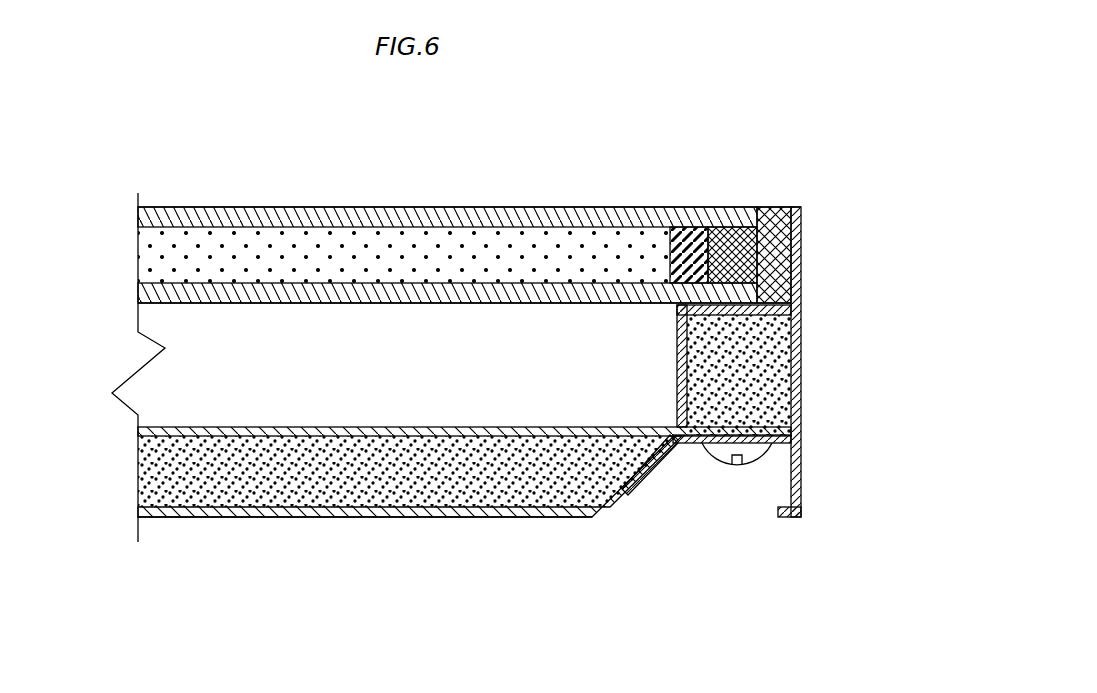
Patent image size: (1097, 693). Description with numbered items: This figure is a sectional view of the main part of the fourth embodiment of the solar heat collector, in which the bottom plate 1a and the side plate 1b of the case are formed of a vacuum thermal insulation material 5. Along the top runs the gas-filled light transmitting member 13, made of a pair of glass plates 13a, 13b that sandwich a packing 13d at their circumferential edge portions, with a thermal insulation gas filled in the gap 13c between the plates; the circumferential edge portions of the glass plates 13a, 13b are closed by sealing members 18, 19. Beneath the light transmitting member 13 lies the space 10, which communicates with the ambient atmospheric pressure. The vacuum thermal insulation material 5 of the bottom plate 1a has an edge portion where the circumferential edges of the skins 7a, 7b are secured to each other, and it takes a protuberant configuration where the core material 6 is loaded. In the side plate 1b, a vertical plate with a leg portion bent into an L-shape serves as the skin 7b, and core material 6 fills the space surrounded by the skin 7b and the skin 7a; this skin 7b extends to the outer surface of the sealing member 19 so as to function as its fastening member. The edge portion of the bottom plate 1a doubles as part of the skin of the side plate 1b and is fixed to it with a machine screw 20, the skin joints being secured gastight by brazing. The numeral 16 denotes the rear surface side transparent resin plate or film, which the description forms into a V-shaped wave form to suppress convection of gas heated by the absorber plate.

The gas-filled light transmitting member 13 is at (458, 326).
The glass plate 13a is at (415, 207).
The glass plate 13b is at (503, 283).
The gap 13c is at (580, 250).
The packing 13d is at (677, 240).
The sealing member 18 is at (730, 245).
The sealing member 19 is at (773, 240).
The side plate 1b is at (758, 375).
The bottom plate 1a is at (511, 463).
The skin 7a is at (505, 428).
The skin 7b is at (465, 518).
The core material 6 is at (520, 480).
The vacuum thermal insulation material 5 is at (218, 519).
The space 10 is at (286, 376).
The rear surface side transparent resin plate 16 is at (661, 463).
The machine screw 20 is at (712, 465).